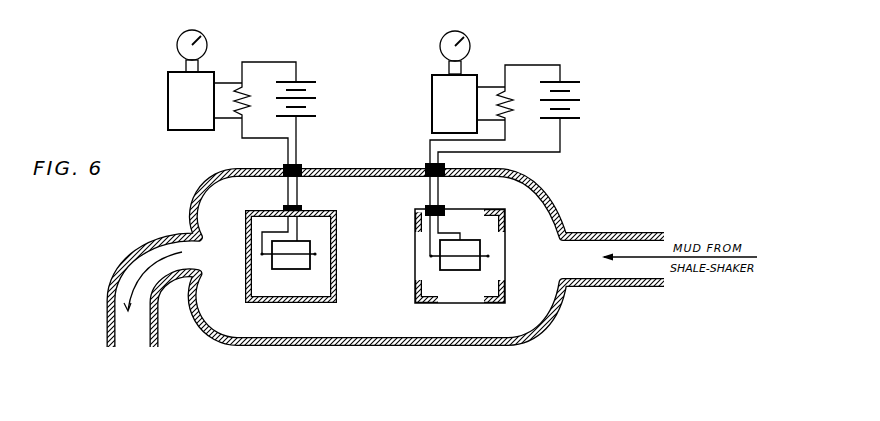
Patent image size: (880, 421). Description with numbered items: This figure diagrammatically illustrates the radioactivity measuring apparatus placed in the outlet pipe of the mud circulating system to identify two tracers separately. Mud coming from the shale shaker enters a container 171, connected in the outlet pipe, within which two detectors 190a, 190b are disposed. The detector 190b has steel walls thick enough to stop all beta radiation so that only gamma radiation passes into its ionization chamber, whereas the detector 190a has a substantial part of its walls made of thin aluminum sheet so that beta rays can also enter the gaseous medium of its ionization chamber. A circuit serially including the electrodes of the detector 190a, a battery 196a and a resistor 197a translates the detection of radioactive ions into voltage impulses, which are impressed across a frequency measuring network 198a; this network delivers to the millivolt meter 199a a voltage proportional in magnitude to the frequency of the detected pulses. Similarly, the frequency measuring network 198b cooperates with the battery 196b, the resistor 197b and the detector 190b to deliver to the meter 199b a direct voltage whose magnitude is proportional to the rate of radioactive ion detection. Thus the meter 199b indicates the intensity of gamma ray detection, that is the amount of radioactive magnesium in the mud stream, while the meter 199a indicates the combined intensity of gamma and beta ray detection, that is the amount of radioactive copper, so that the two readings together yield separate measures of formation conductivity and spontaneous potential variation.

The container 171 is at (545, 190).
The detector 190a is at (490, 283).
The detector 190b is at (297, 287).
The battery 196a is at (575, 93).
The battery 196b is at (311, 91).
The resistor 197a is at (511, 97).
The resistor 197b is at (250, 93).
The frequency measuring network 198a is at (454, 104).
The frequency measuring network 198b is at (191, 101).
The millivolt meter 199a is at (464, 43).
The meter 199b is at (201, 42).